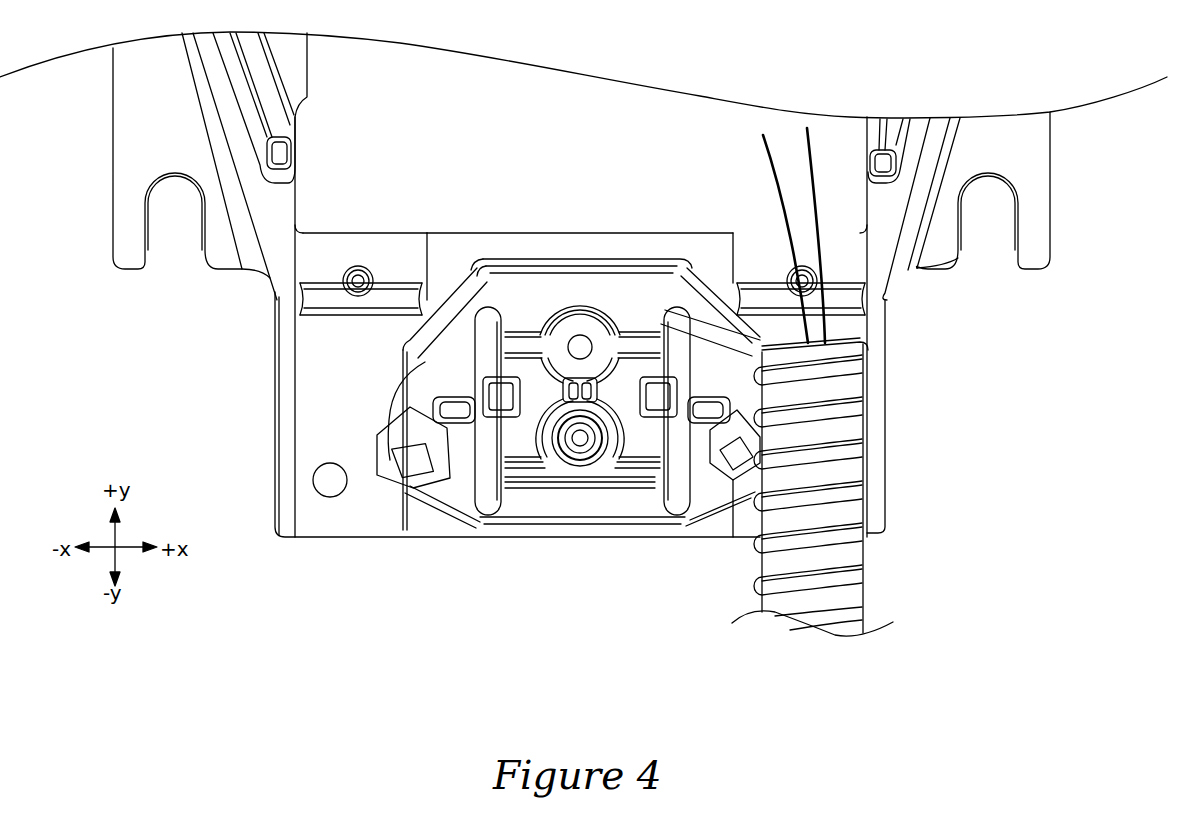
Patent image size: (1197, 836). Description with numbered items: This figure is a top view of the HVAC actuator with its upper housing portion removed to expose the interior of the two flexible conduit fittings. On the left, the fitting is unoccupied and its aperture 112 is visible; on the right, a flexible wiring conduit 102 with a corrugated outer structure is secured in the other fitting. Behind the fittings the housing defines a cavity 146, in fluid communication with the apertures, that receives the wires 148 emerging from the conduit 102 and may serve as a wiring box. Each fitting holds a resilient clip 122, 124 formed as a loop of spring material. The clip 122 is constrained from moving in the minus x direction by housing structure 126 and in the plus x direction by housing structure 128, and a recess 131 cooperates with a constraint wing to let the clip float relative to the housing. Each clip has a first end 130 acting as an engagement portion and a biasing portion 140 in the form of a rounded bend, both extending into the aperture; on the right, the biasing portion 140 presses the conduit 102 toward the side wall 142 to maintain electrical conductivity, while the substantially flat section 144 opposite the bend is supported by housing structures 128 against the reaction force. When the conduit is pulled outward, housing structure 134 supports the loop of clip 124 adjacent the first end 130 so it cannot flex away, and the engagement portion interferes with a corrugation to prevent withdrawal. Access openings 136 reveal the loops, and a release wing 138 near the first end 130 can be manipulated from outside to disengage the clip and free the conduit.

The flexible wiring conduit 102 is at (850, 595).
The aperture 112 is at (337, 430).
The resilient clip 122 is at (465, 285).
The resilient clip 124 is at (667, 285).
The housing structure 126 is at (487, 388).
The housing structure 128 is at (505, 380).
The first end 130 is at (827, 457).
The recess 131 is at (560, 380).
The housing structure 134 is at (738, 437).
The access openings 136 is at (440, 437).
The release wing 138 is at (420, 457).
The biasing portion 140 is at (455, 405).
The side wall 142 is at (867, 362).
The substantially flat section 144 is at (497, 343).
The cavity 146 is at (408, 100).
The wires 148 is at (762, 147).